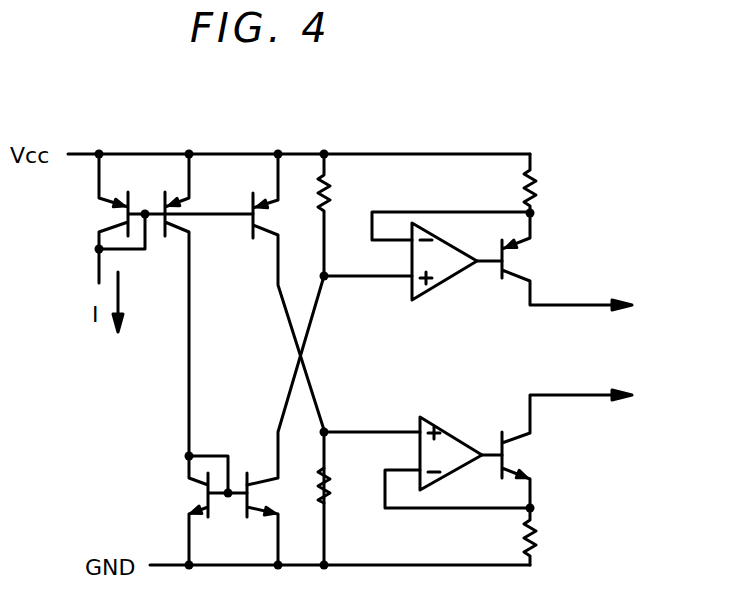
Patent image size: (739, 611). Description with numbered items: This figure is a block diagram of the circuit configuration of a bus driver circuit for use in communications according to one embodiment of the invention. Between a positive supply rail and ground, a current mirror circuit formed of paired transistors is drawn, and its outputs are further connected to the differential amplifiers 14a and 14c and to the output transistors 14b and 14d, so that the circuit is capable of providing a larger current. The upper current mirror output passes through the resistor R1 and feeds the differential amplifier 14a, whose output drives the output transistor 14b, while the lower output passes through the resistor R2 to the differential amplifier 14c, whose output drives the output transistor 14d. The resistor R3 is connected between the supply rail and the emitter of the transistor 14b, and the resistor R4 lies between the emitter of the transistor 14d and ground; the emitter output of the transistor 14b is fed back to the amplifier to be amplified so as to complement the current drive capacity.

The resistor R1 is at (340, 215).
The resistor R2 is at (340, 485).
The resistor R3 is at (546, 183).
The resistor R4 is at (546, 536).
The differential amplifier 14a is at (447, 283).
The output transistor 14b is at (520, 258).
The differential amplifier 14c is at (447, 430).
The output transistor 14d is at (520, 455).